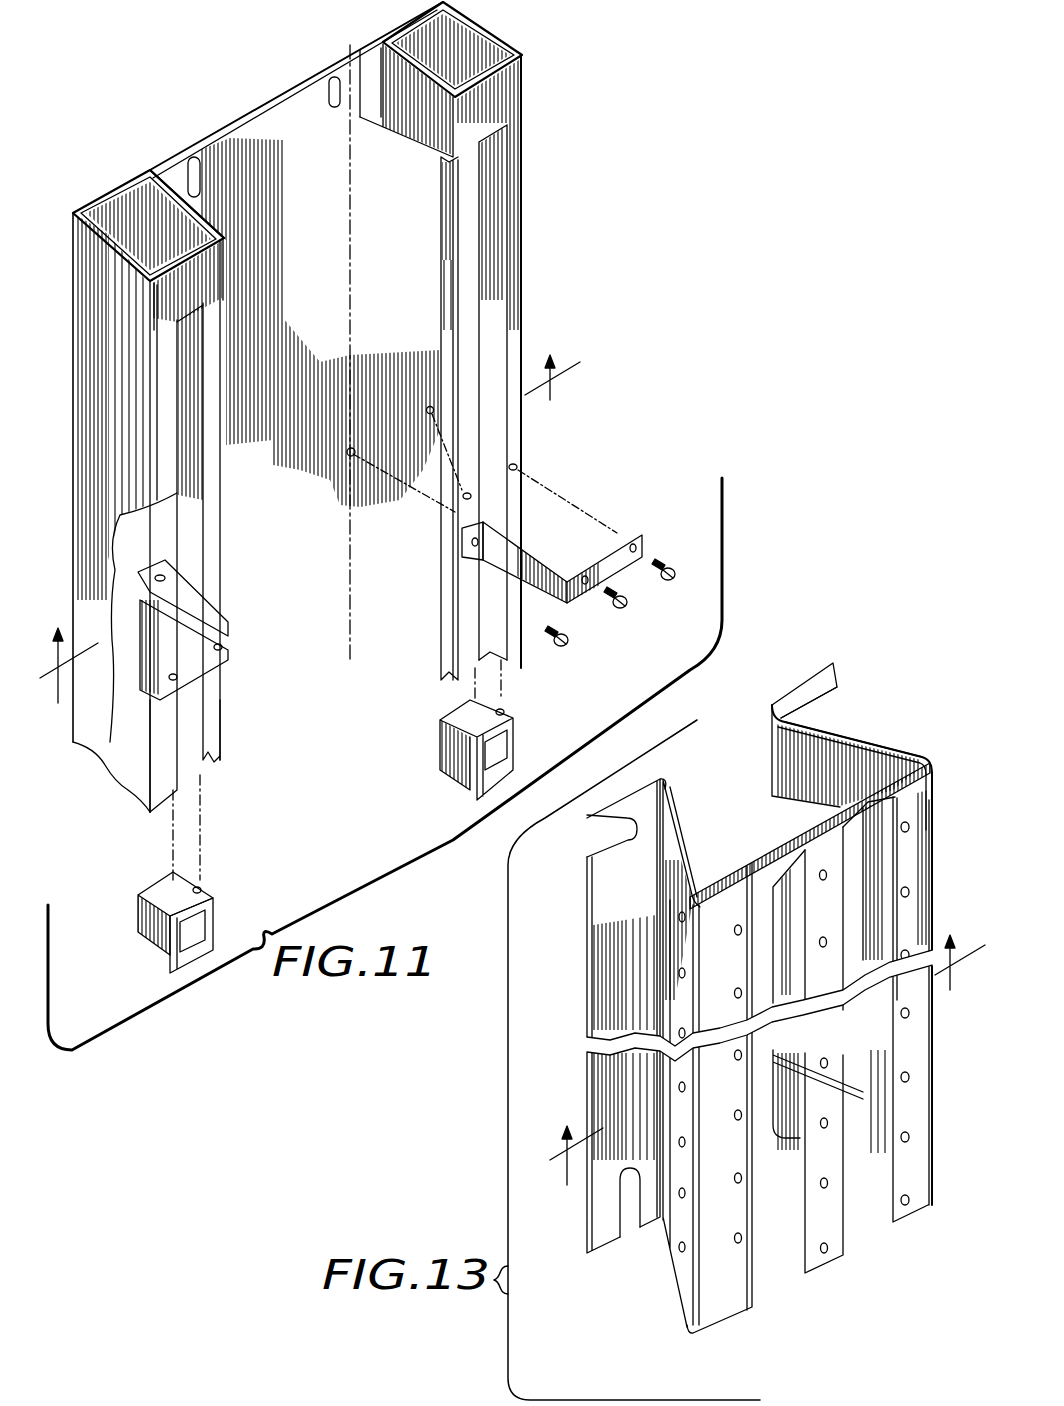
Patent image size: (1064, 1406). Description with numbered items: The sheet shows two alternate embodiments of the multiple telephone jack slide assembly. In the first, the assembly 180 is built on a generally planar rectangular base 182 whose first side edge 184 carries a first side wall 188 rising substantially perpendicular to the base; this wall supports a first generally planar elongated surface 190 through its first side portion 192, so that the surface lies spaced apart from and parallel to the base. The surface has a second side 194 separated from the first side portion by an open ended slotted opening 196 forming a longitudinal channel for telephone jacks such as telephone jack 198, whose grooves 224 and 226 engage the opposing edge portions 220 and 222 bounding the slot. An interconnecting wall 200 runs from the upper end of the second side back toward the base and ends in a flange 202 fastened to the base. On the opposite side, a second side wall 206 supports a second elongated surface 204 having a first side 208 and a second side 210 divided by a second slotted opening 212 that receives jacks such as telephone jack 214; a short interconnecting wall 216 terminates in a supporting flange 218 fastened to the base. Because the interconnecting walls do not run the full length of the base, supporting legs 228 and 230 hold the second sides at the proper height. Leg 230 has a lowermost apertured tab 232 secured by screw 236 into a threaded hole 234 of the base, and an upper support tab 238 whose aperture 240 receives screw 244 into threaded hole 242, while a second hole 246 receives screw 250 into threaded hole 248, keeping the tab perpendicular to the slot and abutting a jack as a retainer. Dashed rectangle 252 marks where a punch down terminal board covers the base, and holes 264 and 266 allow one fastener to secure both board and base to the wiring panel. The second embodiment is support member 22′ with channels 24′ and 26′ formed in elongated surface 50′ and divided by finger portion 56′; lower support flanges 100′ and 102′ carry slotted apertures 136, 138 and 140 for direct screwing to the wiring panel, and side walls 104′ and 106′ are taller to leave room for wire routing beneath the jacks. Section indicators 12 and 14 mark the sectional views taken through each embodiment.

In FIG. 11, the multiple telephone jack slide assembly 180 is at (557, 52).
In FIG. 11, the base 182 is at (253, 127).
In FIG. 11, the first side edge 184 is at (62, 383).
In FIG. 11, the first side wall 188 is at (72, 228).
In FIG. 11, the first generally planar elongated surface 190 is at (205, 280).
In FIG. 11, the first side portion 192 is at (163, 452).
In FIG. 11, the second side 194 is at (212, 406).
In FIG. 11, the slotted opening 196 is at (183, 764).
In FIG. 11, the telephone jack 198 is at (222, 927).
In FIG. 11, the interconnecting wall 200 is at (200, 230).
In FIG. 11, the flange 202 is at (162, 168).
In FIG. 11, the second generally planar elongated surface 204 is at (516, 89).
In FIG. 11, the second side wall 206 is at (507, 40).
In FIG. 11, the first side 208 is at (522, 226).
In FIG. 11, the second side 210 is at (466, 270).
In FIG. 11, the second slotted opening 212 is at (487, 657).
In FIG. 11, the telephone jack 214 is at (515, 736).
In FIG. 11, the short interconnecting wall 216 is at (414, 118).
In FIG. 11, the supporting flange 218 is at (372, 55).
In FIG. 11, the edge portion 220 is at (187, 720).
In FIG. 11, the edge portion 222 is at (200, 698).
In FIG. 11, the groove 224 is at (168, 903).
In FIG. 11, the groove 226 is at (198, 890).
In FIG. 11, the supporting leg 228 is at (175, 566).
In FIG. 11, the supporting leg 230 is at (545, 557).
In FIG. 11, the lowermost apertured tab 232 is at (462, 543).
In FIG. 11, the threaded hole 234 is at (352, 450).
In FIG. 11, the screw 236 is at (560, 648).
In FIG. 11, the upper support tab 238 is at (634, 566).
In FIG. 11, the aperture 240 is at (586, 584).
In FIG. 11, the threaded hole 242 is at (463, 498).
In FIG. 11, the screw 244 is at (630, 606).
In FIG. 11, the second hole 246 is at (636, 545).
In FIG. 11, the threaded hole 248 is at (520, 467).
In FIG. 11, the screw 250 is at (672, 565).
In FIG. 11, the dashed rectangle 252 is at (348, 286).
In FIG. 11, the hole 264 is at (195, 160).
In FIG. 11, the hole 266 is at (330, 72).
In FIG. 11, the section indicator 12 is at (310, 537).
In FIG. 13, the support member 22′ is at (917, 724).
In FIG. 13, the first elongated channel 24′ is at (760, 1260).
In FIG. 13, the second elongated channel 26′ is at (863, 1230).
In FIG. 13, the generally planar elongated surface 50′ is at (916, 830).
In FIG. 13, the finger portion 56′ is at (832, 1210).
In FIG. 13, the lower support flange 100′ is at (612, 938).
In FIG. 13, the lower support flange 102′ is at (838, 719).
In FIG. 13, the side wall 104′ is at (675, 838).
In FIG. 13, the side wall 106′ is at (788, 765).
In FIG. 13, the slotted aperture 136 is at (586, 846).
In FIG. 13, the slotted aperture 138 is at (632, 1226).
In FIG. 13, the aperture 140 is at (839, 696).
In FIG. 13, the section indicator 14 is at (767, 1065).